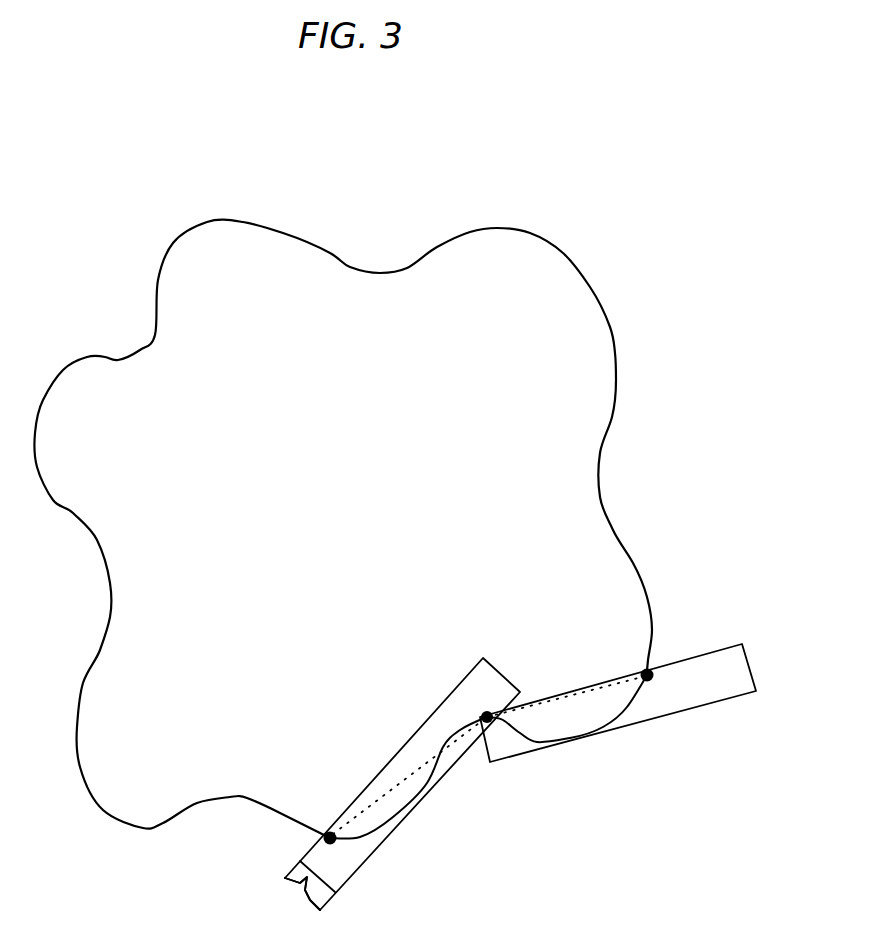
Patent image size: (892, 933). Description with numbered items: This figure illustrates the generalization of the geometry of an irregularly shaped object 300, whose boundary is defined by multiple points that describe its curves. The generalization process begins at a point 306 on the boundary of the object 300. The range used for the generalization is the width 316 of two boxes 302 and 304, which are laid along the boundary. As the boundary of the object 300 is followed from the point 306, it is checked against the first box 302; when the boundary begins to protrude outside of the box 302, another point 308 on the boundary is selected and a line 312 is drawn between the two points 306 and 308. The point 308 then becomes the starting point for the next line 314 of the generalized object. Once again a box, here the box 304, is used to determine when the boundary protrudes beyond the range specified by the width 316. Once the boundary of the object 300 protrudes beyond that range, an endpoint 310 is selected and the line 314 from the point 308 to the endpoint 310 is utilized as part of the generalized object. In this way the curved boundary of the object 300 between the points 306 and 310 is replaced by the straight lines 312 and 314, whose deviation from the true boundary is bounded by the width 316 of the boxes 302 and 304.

The object 300 is at (615, 353).
The box 302 is at (345, 885).
The box 304 is at (723, 705).
The point 306 is at (330, 838).
The point 308 is at (490, 720).
The endpoint 310 is at (652, 683).
The line 312 is at (383, 798).
The line 314 is at (542, 705).
The width 316 is at (307, 892).